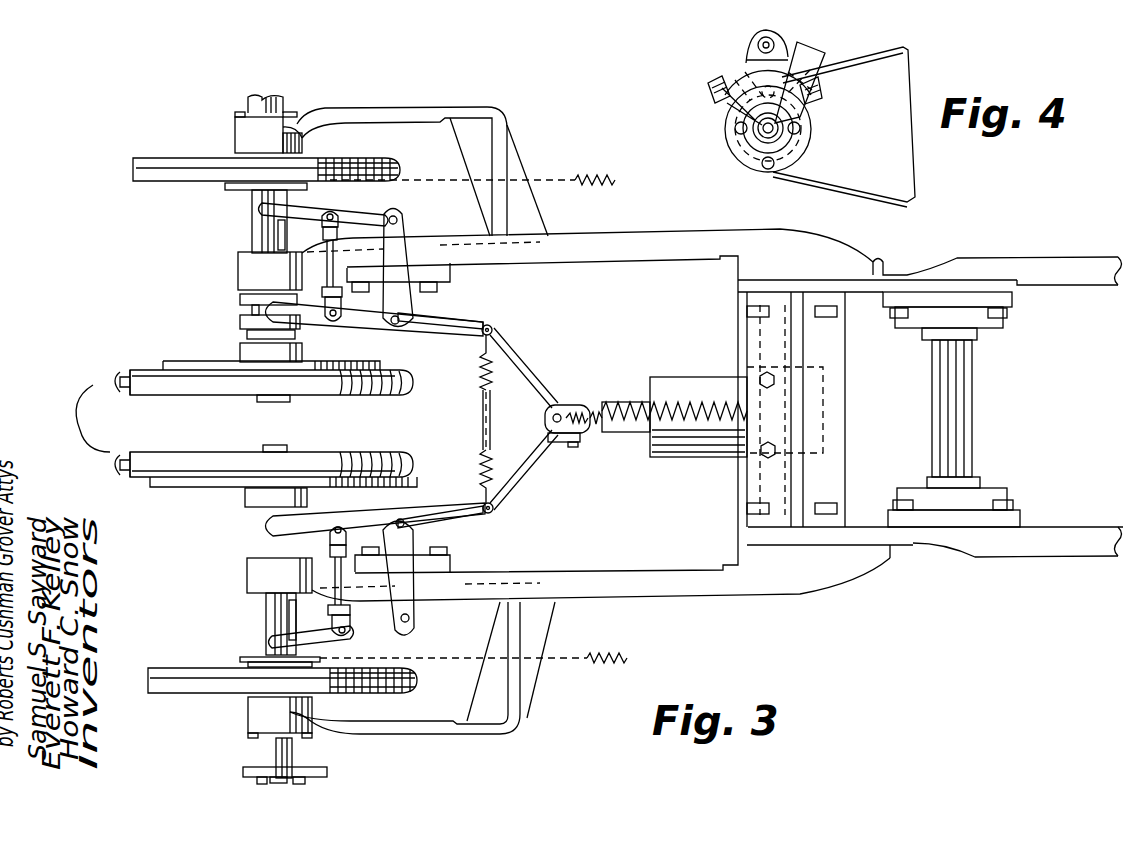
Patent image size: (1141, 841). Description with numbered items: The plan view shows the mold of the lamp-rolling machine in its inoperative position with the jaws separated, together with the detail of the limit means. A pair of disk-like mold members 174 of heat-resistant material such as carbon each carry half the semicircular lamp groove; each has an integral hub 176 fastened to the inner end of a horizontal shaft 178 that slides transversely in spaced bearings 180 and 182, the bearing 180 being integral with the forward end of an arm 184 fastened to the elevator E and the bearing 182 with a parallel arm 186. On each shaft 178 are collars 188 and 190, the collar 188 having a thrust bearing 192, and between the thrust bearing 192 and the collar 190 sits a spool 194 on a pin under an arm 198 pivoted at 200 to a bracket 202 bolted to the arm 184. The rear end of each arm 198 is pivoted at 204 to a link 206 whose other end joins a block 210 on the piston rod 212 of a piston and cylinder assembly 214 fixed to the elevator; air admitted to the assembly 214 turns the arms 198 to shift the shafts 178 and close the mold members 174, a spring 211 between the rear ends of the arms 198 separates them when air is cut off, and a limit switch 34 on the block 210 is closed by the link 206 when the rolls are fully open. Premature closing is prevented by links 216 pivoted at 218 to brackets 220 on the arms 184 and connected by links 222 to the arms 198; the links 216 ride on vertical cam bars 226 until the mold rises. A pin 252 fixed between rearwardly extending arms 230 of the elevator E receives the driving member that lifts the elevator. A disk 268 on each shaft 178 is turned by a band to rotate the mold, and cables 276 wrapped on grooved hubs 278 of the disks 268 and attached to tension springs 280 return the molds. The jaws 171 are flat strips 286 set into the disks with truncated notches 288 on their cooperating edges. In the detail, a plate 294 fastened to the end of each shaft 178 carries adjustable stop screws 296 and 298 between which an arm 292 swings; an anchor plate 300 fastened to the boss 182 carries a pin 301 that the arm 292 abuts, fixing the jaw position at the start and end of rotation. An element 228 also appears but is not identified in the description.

In FIG. 3, the jaws 171 is at (55, 426).
In FIG. 3, the mold members 174 is at (393, 370).
In FIG. 3, the hub 176 is at (240, 348).
In FIG. 3, the horizontal shaft 178 is at (250, 223).
In FIG. 3, the bearing 180 is at (238, 267).
In FIG. 3, the bearing 182 is at (235, 128).
In FIG. 3, the arm 184 is at (583, 262).
In FIG. 3, the arm 186 is at (410, 100).
In FIG. 3, the collar 188 is at (247, 334).
In FIG. 3, the collar 190 is at (240, 298).
In FIG. 3, the thrust bearing 192 is at (240, 320).
In FIG. 3, the spool 194 is at (252, 310).
In FIG. 3, the arm 198 is at (340, 323).
In FIG. 3, the pivot 200 is at (413, 317).
In FIG. 3, the bracket 202 is at (433, 272).
In FIG. 3, the pivot 204 is at (490, 323).
In FIG. 3, the link 206 is at (482, 418).
In FIG. 3, the block 210 is at (563, 407).
In FIG. 3, the spring 211 is at (477, 377).
In FIG. 3, the piston rod 212 is at (597, 433).
In FIG. 3, the piston and cylinder assembly 214 is at (645, 470).
In FIG. 3, the links 216 is at (353, 207).
In FIG. 3, the pivot 218 is at (413, 207).
In FIG. 3, the brackets 220 is at (403, 230).
In FIG. 3, the links 222 is at (423, 419).
In FIG. 3, the cam bars 226 is at (290, 232).
In FIG. 3, the support bracket 228 is at (833, 373).
In FIG. 3, the arms 230 is at (1050, 277).
In FIG. 3, the pin 252 is at (957, 390).
In FIG. 3, the disk 268 is at (417, 677).
In FIG. 3, the cables 276 is at (567, 660).
In FIG. 3, the grooved hubs 278 is at (243, 657).
In FIG. 3, the tension springs 280 is at (620, 655).
In FIG. 3, the flat strips 286 is at (110, 377).
In FIG. 3, the truncated notches 288 is at (118, 455).
In FIG. 4, the arm 292 is at (815, 55).
In FIG. 4, the plate 294 is at (732, 73).
In FIG. 4, the stop screw 296 is at (712, 97).
In FIG. 4, the stop screw 298 is at (822, 100).
In FIG. 3, the anchor plate 300 is at (248, 735).
In FIG. 4, the anchor plate 300 is at (748, 36).
In FIG. 3, the pin 301 is at (276, 752).
In FIG. 4, the pin 301 is at (757, 30).
In FIG. 3, the limit switch 34 is at (575, 445).
In FIG. 3, the elevator E is at (848, 590).